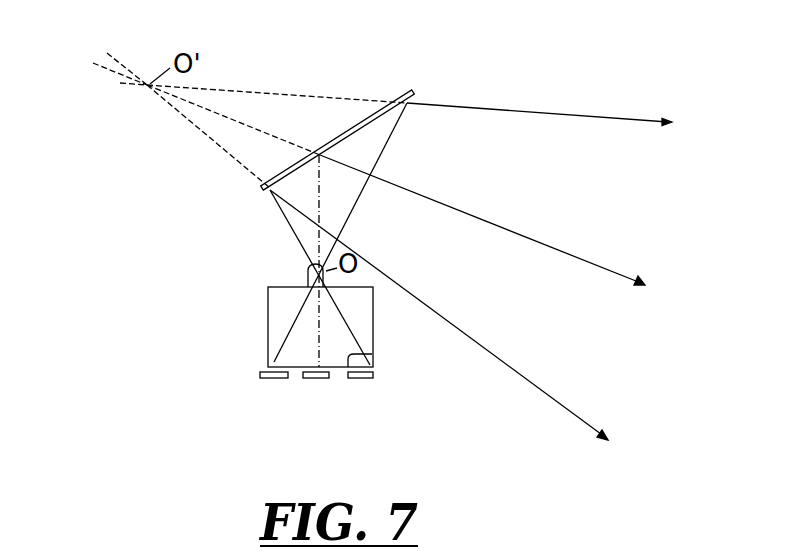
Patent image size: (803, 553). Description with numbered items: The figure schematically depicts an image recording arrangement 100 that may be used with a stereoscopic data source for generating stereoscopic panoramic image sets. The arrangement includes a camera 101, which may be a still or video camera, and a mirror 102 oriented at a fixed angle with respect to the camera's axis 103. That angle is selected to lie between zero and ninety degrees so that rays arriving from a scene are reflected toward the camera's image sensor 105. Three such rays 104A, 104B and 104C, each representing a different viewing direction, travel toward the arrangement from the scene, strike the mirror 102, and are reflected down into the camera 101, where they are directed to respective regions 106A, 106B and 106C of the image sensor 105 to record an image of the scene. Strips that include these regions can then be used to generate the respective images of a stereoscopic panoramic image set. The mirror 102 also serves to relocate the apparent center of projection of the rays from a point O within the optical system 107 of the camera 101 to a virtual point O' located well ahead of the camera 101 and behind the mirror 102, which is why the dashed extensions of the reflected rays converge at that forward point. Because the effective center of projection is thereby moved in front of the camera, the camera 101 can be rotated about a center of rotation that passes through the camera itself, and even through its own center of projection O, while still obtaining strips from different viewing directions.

The image recording arrangement 100 is at (168, 449).
The camera 101 is at (268, 315).
The mirror 102 is at (262, 190).
The camera's axis 103 is at (318, 338).
The ray 104A is at (573, 113).
The ray 104B is at (567, 258).
The ray 104C is at (507, 360).
The image sensor 105 is at (372, 354).
The region 106A is at (259, 374).
The region 106B is at (320, 380).
The region 106C is at (375, 377).
The optical system 107 is at (309, 270).